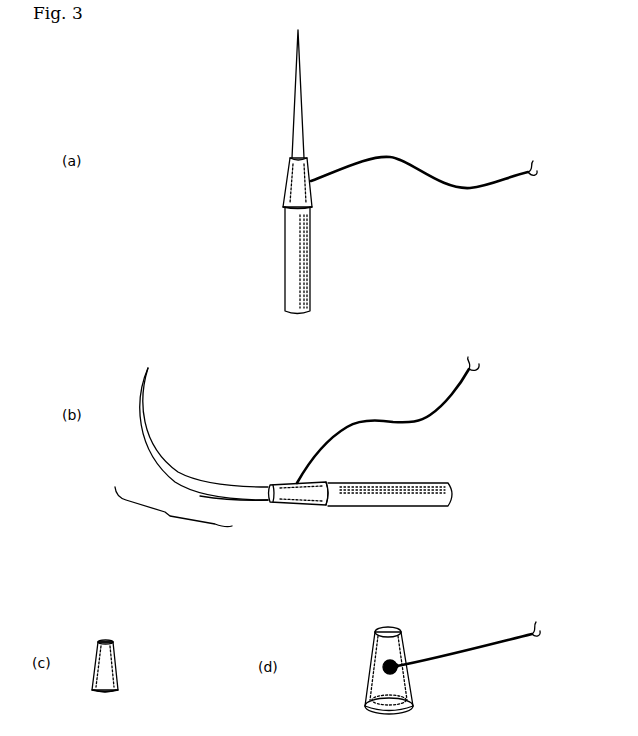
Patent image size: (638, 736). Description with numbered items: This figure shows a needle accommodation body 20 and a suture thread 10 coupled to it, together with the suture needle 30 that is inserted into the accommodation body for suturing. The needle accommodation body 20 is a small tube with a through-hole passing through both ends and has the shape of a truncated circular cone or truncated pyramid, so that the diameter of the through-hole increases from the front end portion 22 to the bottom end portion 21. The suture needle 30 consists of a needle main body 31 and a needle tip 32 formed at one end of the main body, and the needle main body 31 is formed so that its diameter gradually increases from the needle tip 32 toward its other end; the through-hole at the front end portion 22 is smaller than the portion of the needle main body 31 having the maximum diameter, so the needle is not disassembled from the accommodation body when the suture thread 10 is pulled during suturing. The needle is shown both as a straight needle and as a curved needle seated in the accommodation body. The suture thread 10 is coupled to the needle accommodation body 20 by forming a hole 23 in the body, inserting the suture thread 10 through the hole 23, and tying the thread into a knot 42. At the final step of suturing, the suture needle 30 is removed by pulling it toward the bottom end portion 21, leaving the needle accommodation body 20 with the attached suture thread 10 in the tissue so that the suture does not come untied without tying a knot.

The suture thread 10 is at (387, 157).
The needle accommodation body 20 is at (290, 177).
The bottom end portion of needle accommodation body 21 is at (287, 205).
The front end portion of needle accommodation body 22 is at (107, 642).
The hole of needle accommodation body 23 is at (417, 658).
The suture needle 30 is at (312, 260).
The needle main body 31 is at (253, 500).
The needle tip 32 is at (301, 92).
The knot 42 is at (383, 670).